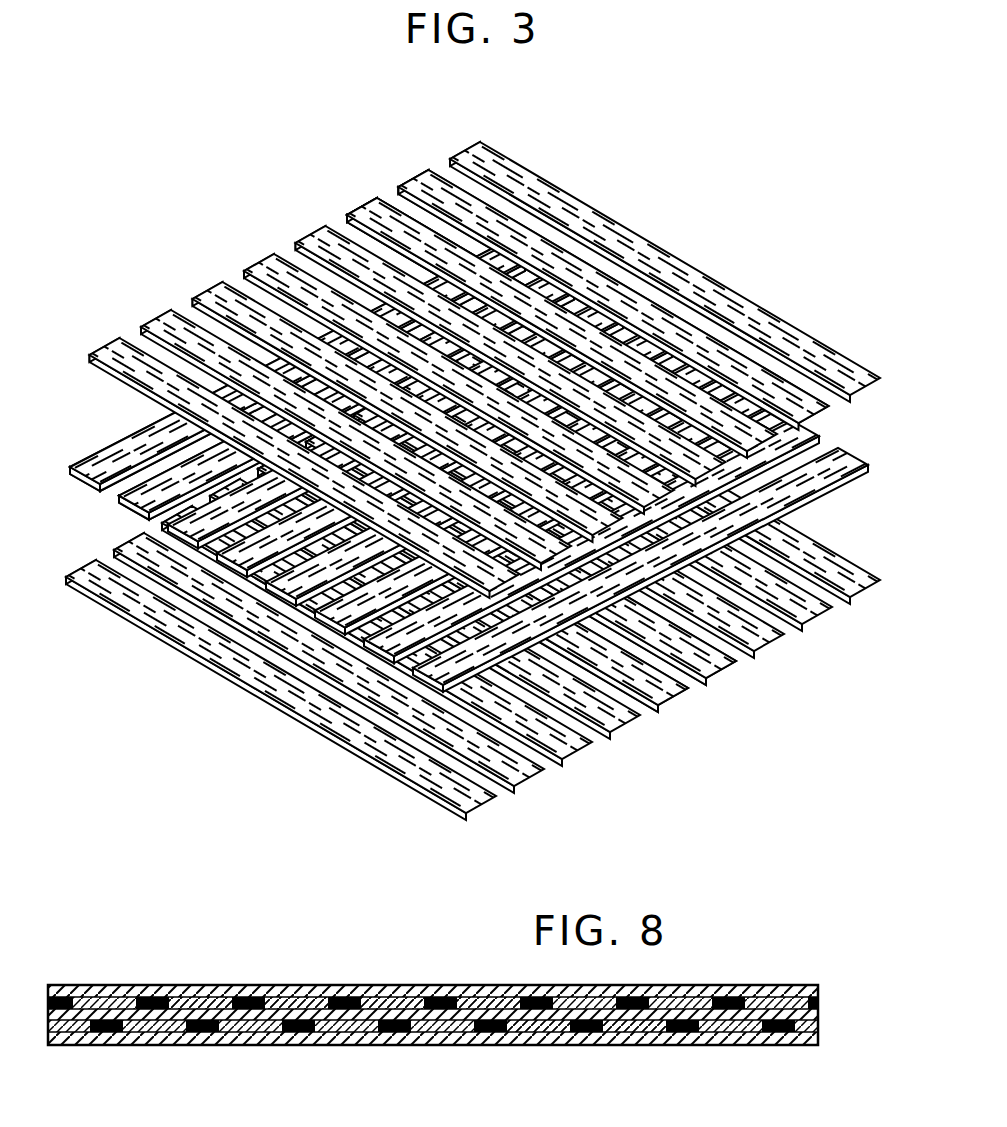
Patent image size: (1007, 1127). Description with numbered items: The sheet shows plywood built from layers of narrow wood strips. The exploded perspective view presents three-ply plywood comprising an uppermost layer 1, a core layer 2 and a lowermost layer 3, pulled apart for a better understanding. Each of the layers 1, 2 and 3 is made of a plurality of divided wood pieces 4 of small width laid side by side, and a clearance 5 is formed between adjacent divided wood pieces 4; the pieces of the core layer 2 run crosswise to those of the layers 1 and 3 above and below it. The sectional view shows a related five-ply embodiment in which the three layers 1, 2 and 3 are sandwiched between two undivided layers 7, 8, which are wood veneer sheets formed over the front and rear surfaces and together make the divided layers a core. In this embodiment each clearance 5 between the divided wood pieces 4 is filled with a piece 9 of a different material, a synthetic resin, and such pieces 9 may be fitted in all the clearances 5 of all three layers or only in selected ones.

In FIG. 3, the uppermost layer 1 is at (505, 151).
In FIG. 8, the uppermost layer 1 is at (822, 996).
In FIG. 3, the core layer 2 is at (856, 455).
In FIG. 8, the core layer 2 is at (822, 1012).
In FIG. 3, the lowermost layer 3 is at (852, 556).
In FIG. 8, the lowermost layer 3 is at (822, 1030).
In FIG. 3, the divided wood piece 4 is at (422, 180).
In FIG. 8, the divided wood piece 4 is at (205, 1003).
In FIG. 3, the clearance 5 is at (392, 202).
In FIG. 8, the clearance 5 is at (468, 1003).
In FIG. 8, the undivided layer 7 is at (752, 985).
In FIG. 8, the undivided layer 8 is at (760, 1045).
In FIG. 8, the piece of different material 9 is at (250, 1003).